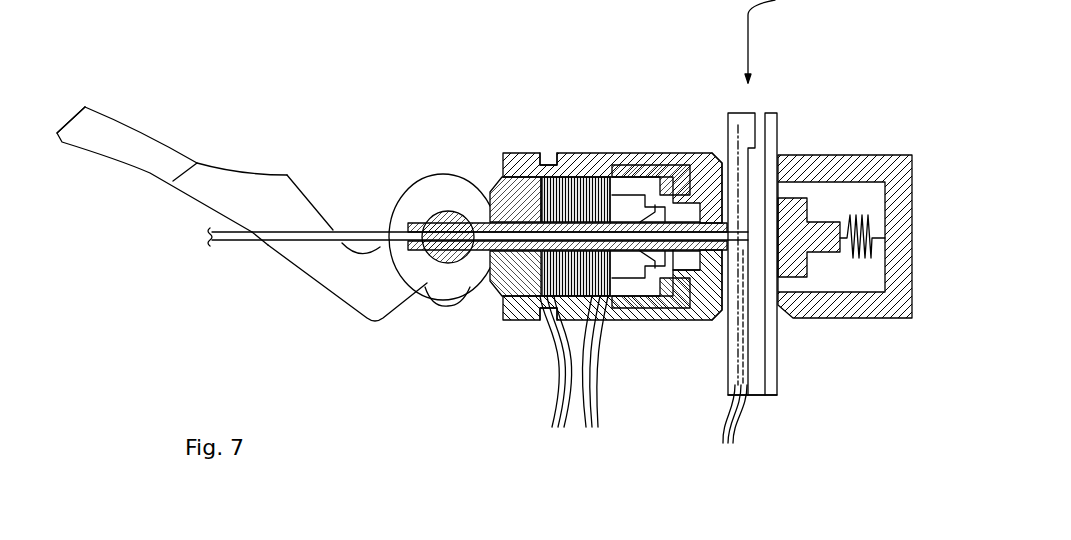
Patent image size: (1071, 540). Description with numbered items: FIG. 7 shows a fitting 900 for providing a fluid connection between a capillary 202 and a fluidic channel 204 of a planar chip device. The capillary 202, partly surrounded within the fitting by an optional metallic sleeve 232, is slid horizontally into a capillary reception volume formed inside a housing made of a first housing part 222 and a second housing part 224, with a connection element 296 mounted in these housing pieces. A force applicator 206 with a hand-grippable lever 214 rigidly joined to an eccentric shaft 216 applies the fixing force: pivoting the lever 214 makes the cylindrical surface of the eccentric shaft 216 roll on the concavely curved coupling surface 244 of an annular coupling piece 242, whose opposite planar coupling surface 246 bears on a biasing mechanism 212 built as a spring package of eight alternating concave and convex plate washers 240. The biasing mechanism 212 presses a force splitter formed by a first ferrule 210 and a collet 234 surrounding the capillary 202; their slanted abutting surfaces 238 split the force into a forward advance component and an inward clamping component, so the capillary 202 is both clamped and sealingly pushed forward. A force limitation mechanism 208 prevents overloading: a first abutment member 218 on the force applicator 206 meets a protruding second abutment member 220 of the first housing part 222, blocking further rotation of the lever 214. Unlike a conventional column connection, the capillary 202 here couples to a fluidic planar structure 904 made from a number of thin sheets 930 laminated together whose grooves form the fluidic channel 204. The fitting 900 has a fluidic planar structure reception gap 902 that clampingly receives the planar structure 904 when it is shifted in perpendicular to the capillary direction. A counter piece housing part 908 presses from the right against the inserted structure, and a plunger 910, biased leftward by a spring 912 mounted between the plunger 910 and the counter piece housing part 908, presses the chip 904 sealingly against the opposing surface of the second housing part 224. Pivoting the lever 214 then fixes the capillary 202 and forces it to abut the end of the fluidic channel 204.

The fitting 900 is at (112, 98).
The force applicator 206 is at (217, 162).
The force limitation mechanism 208 is at (293, 177).
The lever 214 is at (63, 141).
The eccentric shaft 216 is at (412, 207).
The first abutment member 218 is at (310, 200).
The capillary 202 is at (380, 313).
The metallic sleeve 232 is at (440, 300).
The fluidic channel 204 is at (743, 177).
The first housing part 222 is at (505, 152).
The second housing part 224 is at (682, 170).
The second abutment member 220 is at (540, 165).
The concavely curved coupling surface 244 is at (487, 185).
The coupling piece 242 is at (512, 305).
The planar coupling surface 246 is at (556, 185).
The biasing mechanism 212 is at (577, 192).
The abutting surfaces 238 is at (622, 178).
The connection element 296 is at (660, 185).
The first ferrule 210 is at (625, 305).
The collet 234 is at (677, 290).
The plate washers 240 is at (568, 376).
The fluidic planar structure reception gap 902 is at (725, 165).
The thin sheets 930 is at (770, 343).
The fluidic planar structure 904 is at (757, 368).
The counter piece housing part 908 is at (853, 170).
The plunger 910 is at (787, 262).
The spring 912 is at (872, 255).